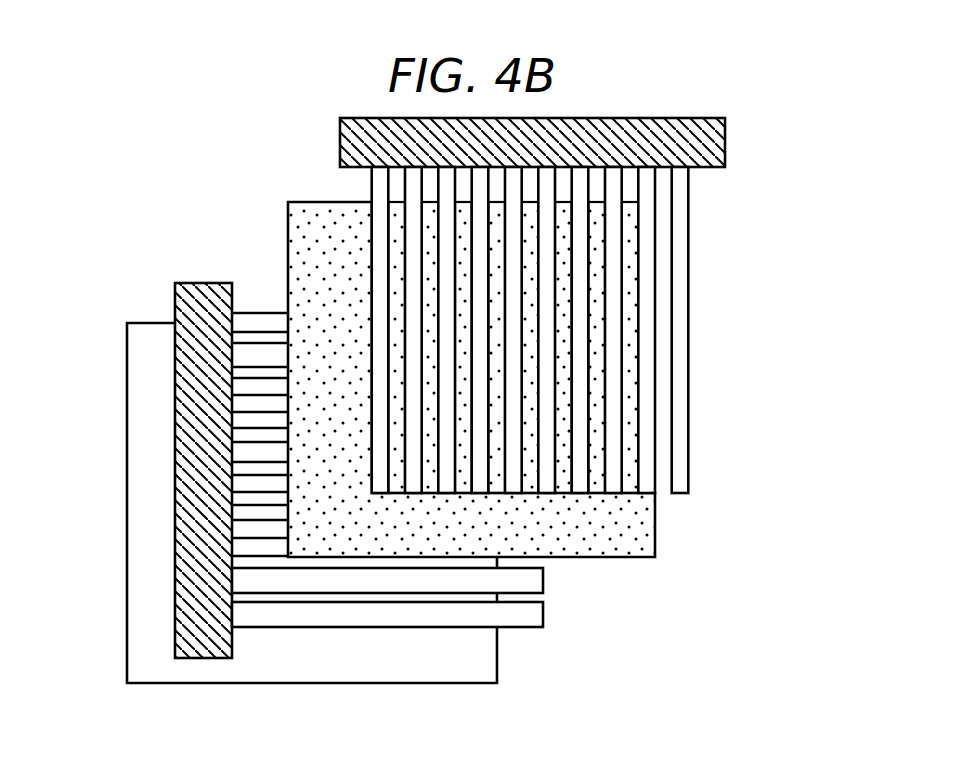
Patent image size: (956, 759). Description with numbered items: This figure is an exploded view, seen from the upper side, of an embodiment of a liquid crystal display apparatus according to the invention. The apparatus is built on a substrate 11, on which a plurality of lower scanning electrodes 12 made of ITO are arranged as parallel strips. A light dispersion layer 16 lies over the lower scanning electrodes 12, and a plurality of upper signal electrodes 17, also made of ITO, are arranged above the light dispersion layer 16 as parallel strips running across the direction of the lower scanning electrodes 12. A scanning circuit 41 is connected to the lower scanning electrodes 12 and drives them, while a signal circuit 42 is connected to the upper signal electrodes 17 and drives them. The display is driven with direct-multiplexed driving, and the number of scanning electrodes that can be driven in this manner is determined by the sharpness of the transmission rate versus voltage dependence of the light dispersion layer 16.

The substrate 11 is at (423, 670).
The lower scanning electrodes 12 is at (530, 618).
The light dispersion layer 16 is at (653, 522).
The upper signal electrodes 17 is at (677, 342).
The scanning circuit 41 is at (175, 302).
The signal circuit 42 is at (614, 137).